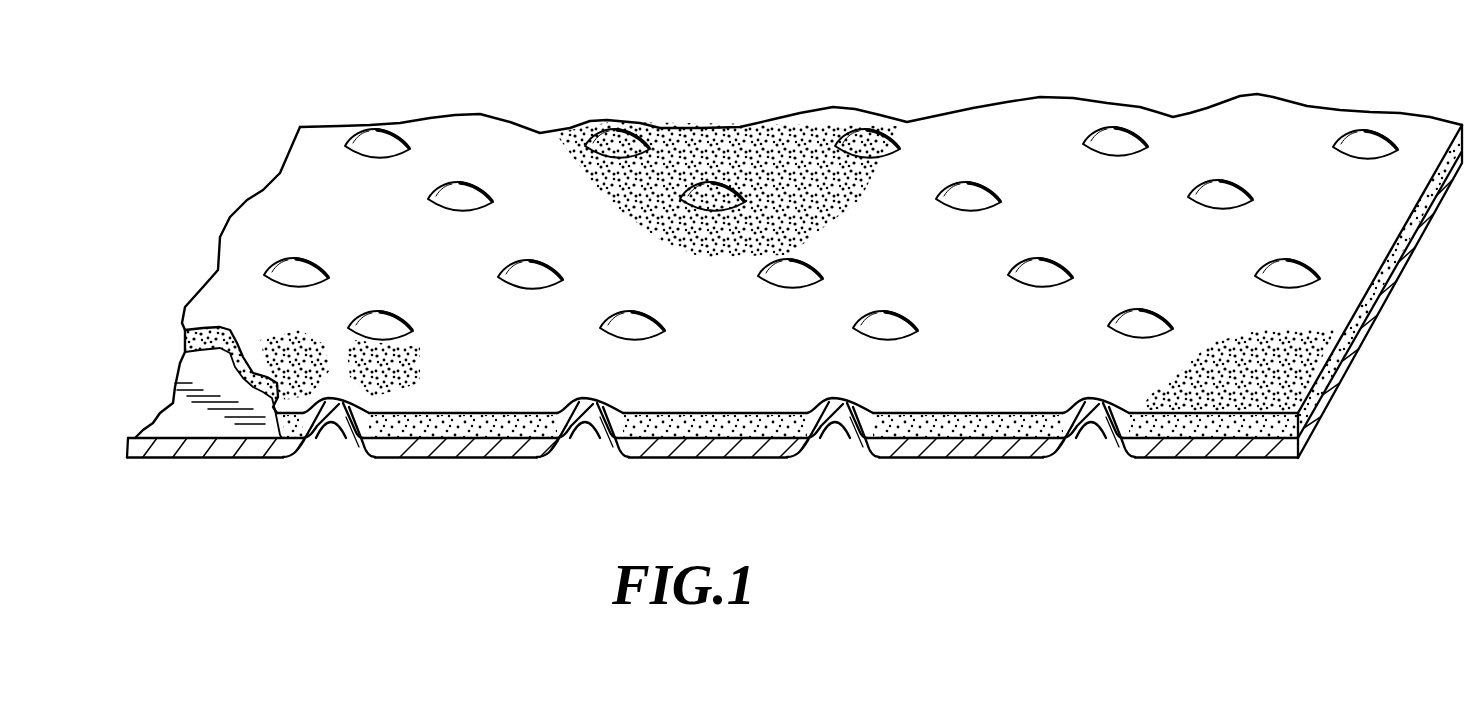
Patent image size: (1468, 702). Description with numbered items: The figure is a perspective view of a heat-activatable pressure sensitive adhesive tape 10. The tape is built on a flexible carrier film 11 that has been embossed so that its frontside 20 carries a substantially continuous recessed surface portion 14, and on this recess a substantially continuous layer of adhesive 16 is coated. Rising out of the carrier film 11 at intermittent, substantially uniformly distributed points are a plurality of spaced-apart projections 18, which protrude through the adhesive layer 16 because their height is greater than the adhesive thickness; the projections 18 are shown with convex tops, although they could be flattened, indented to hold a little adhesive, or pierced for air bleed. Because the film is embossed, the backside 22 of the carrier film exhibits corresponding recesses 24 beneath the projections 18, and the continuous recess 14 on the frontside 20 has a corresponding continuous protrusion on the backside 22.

The pressure sensitive adhesive tape 10 is at (1220, 65).
The flexible carrier film 11 is at (1165, 463).
The recessed surface portion 14 is at (1130, 413).
The adhesive layer 16 is at (1218, 280).
The projections 18 is at (715, 193).
The frontside 20 is at (178, 413).
The backside 22 is at (982, 458).
The recesses 24 is at (586, 432).